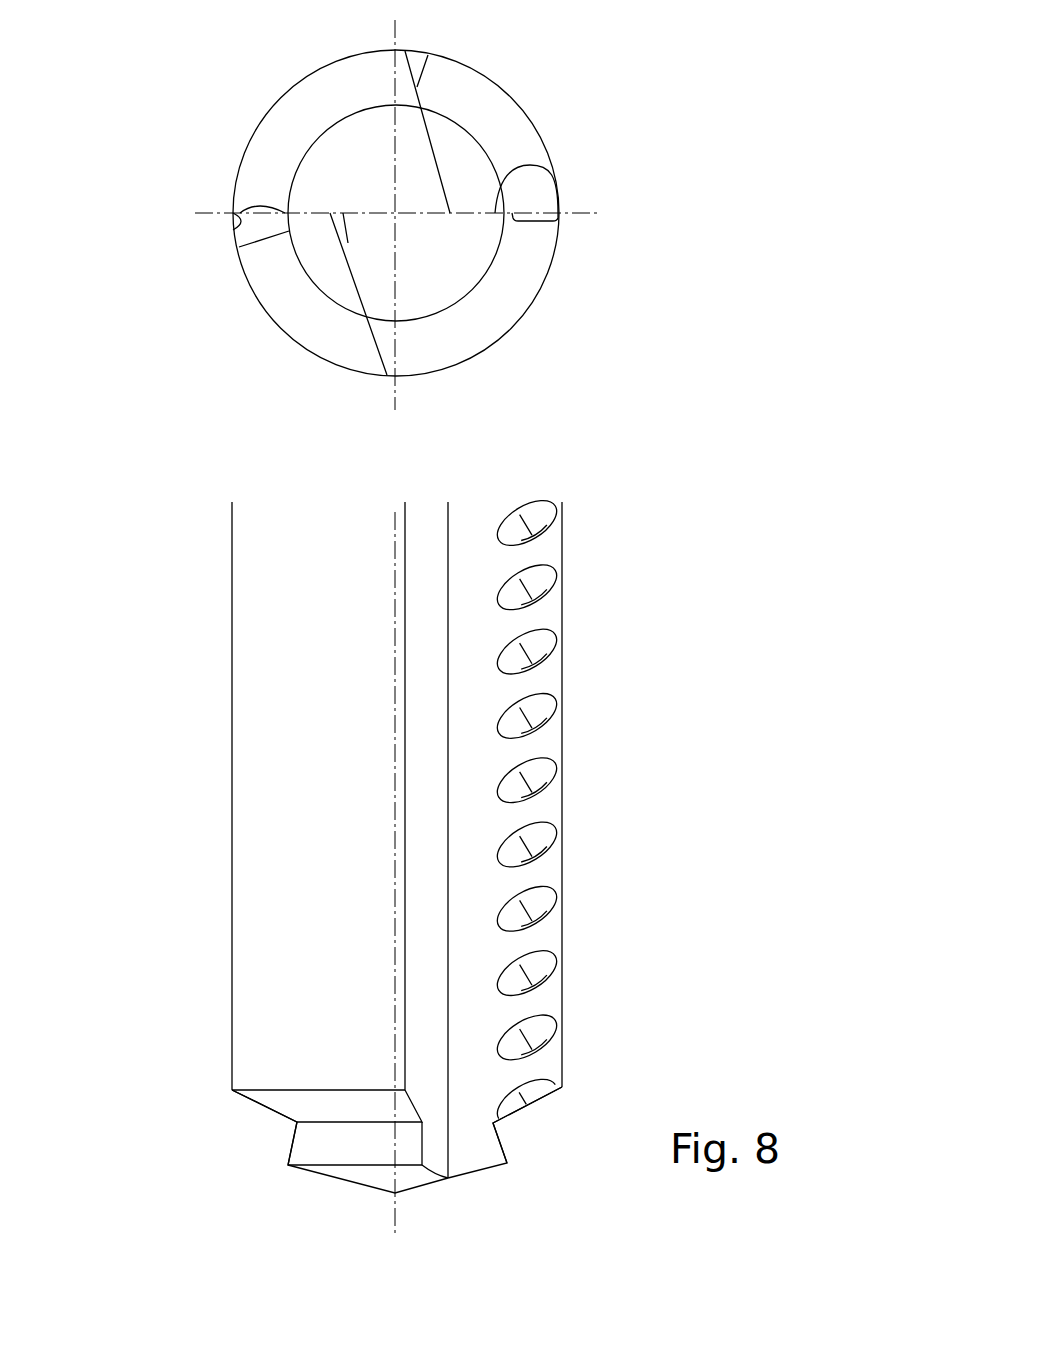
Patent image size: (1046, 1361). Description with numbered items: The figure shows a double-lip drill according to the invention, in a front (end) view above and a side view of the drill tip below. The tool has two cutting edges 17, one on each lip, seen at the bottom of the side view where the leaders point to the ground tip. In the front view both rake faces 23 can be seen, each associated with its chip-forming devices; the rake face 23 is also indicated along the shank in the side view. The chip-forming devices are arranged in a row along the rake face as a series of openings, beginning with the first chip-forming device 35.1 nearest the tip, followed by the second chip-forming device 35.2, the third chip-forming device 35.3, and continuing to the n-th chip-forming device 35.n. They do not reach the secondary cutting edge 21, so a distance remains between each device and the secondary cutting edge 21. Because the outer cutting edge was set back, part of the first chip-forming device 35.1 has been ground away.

The cutting edge 17 is at (267, 1112).
The secondary cutting edge 21 is at (562, 675).
The rake face 23 is at (540, 165).
The chip-forming device 35.n is at (547, 512).
The third chip-forming device 35.3 is at (545, 963).
The second chip-forming device 35.2 is at (543, 1025).
The first chip-forming device 35.1 is at (543, 1088).